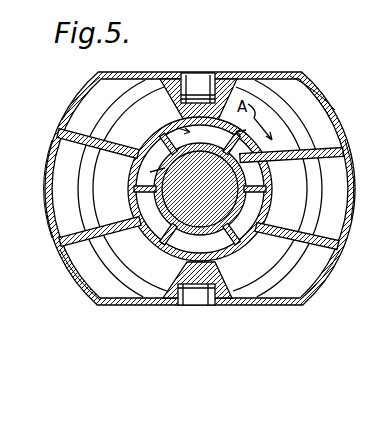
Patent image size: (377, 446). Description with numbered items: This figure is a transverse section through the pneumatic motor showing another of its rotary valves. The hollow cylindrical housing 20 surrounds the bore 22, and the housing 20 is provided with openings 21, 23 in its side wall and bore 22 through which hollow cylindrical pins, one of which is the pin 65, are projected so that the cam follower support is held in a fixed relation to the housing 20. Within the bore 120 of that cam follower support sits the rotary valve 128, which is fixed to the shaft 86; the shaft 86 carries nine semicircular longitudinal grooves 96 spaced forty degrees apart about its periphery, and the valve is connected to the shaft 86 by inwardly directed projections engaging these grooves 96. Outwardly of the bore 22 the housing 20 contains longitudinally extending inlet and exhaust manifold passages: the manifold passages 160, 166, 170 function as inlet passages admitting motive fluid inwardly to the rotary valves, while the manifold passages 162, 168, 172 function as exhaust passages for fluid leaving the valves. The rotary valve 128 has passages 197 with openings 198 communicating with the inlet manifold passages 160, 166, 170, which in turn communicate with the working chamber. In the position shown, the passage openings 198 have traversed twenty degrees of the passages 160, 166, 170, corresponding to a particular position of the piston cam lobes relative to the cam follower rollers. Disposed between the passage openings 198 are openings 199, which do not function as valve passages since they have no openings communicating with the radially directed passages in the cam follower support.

The housing 20 is at (288, 69).
The opening 21 is at (195, 72).
The bore 22 is at (90, 182).
The opening 23 is at (208, 302).
The hollow cylindrical pin 65 is at (187, 303).
The shaft 86 is at (210, 184).
The longitudinal grooves 96 is at (200, 189).
The bore 120 is at (112, 118).
The rotary valve 128 is at (143, 83).
The manifold passage 160 is at (313, 88).
The manifold passage 162 is at (350, 178).
The manifold passage 166 is at (270, 288).
The manifold passage 168 is at (97, 282).
The manifold passage 170 is at (60, 162).
The manifold passage 172 is at (85, 100).
The passages 197 is at (175, 123).
The passage openings 198 is at (133, 203).
The openings 199 is at (147, 138).